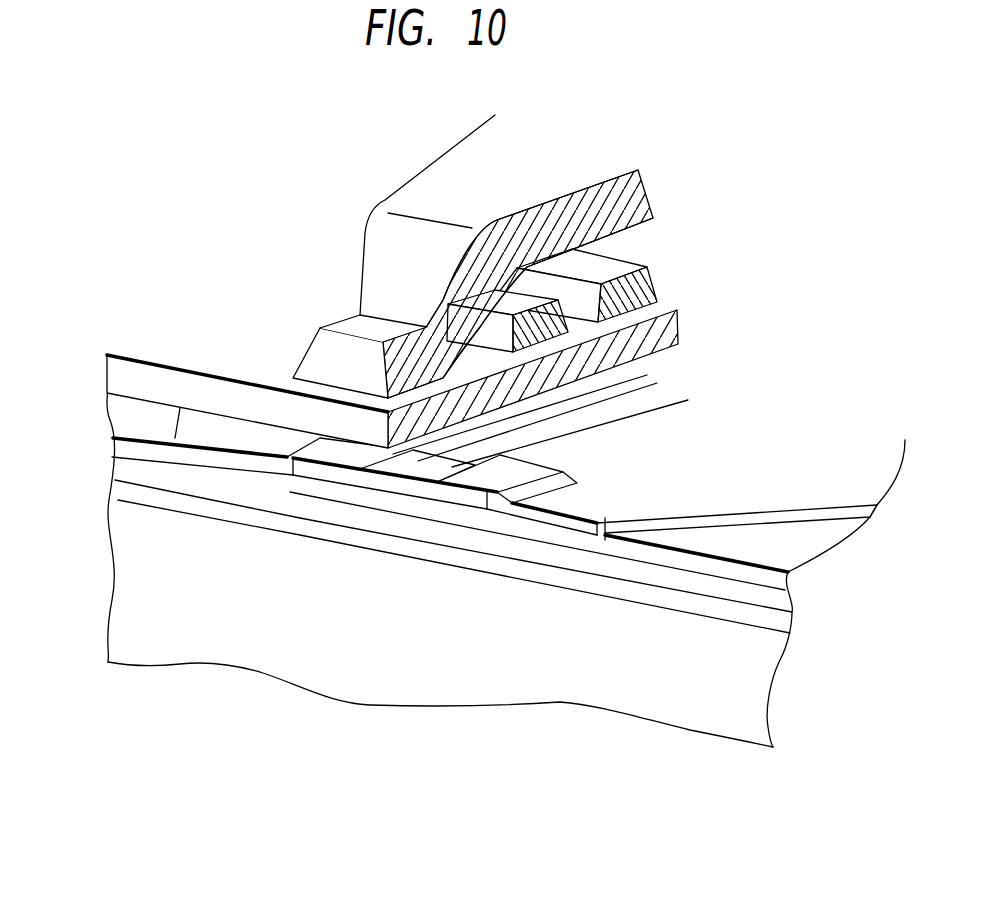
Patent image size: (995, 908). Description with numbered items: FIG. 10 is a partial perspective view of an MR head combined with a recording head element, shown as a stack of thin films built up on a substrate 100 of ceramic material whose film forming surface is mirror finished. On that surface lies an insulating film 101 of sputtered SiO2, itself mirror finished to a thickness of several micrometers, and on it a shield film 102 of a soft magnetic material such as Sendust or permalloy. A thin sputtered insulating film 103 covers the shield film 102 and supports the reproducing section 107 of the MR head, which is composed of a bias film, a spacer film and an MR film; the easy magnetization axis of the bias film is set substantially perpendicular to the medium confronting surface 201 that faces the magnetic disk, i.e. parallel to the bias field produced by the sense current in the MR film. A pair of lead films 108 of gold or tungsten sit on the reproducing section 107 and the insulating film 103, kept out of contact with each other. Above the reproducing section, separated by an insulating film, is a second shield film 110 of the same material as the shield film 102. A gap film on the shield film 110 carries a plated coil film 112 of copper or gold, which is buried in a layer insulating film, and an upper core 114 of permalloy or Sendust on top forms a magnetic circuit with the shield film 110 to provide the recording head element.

The substrate 100 is at (755, 672).
The insulating film 101 is at (772, 620).
The shield film 102 is at (117, 475).
The insulating film 103 is at (773, 577).
The reproducing section 107 is at (385, 485).
The lead films 108 is at (192, 422).
The shield film 110 is at (110, 378).
The coil film 112 is at (608, 268).
The upper core 114 is at (378, 290).
The medium confronting surface 201 is at (417, 687).